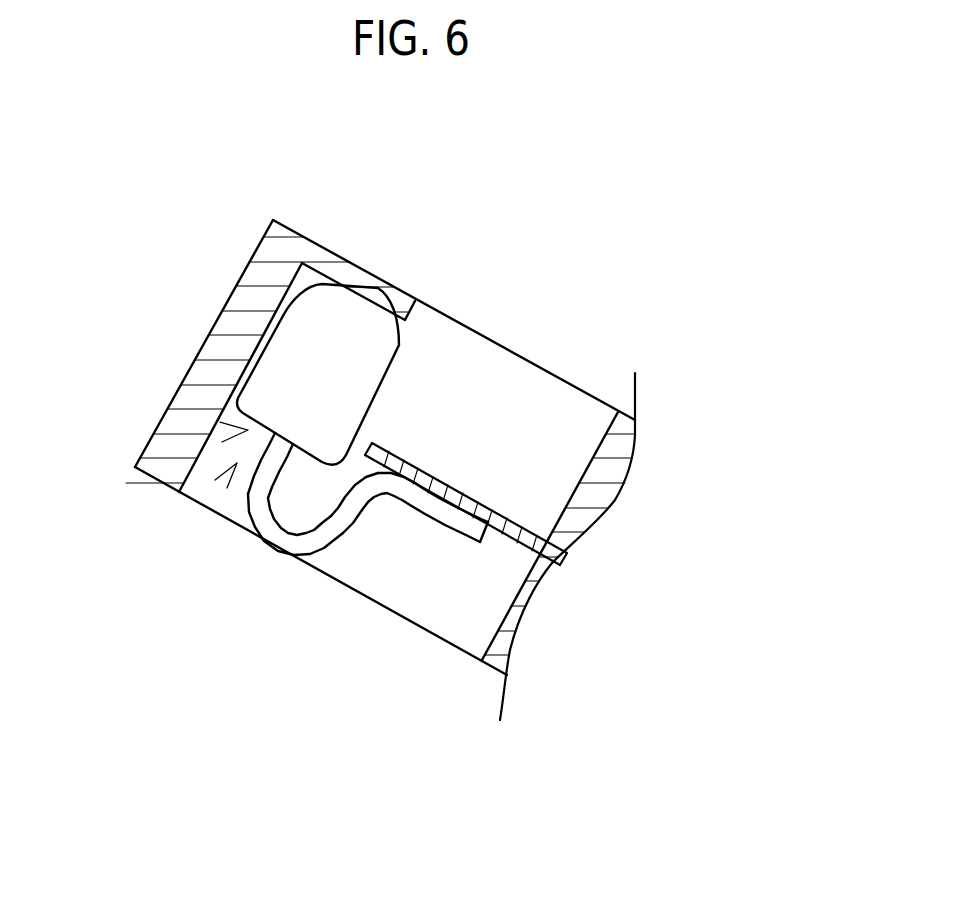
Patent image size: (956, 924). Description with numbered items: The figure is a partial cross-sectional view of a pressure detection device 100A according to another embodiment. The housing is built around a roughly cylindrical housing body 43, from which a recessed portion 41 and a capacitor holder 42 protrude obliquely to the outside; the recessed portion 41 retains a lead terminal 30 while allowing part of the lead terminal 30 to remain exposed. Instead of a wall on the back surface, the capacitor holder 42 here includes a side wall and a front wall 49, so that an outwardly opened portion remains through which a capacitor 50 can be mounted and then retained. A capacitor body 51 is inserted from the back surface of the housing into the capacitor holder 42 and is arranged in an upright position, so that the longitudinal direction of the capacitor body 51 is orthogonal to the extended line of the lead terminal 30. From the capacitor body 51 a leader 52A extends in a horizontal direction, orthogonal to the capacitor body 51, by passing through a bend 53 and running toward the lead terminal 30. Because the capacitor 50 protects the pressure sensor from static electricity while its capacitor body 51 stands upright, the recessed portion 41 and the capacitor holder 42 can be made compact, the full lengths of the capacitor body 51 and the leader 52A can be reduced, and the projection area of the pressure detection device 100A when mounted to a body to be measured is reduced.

The pressure detection device 100A is at (695, 303).
The lead terminal 30 is at (437, 483).
The recessed portion 41 is at (430, 610).
The capacitor holder 42 is at (227, 488).
The housing body 43 is at (616, 420).
The front wall 49 is at (242, 323).
The capacitor 50 is at (222, 442).
The capacitor body 51 is at (347, 313).
The leader 52A is at (423, 498).
The bend 53 is at (275, 533).